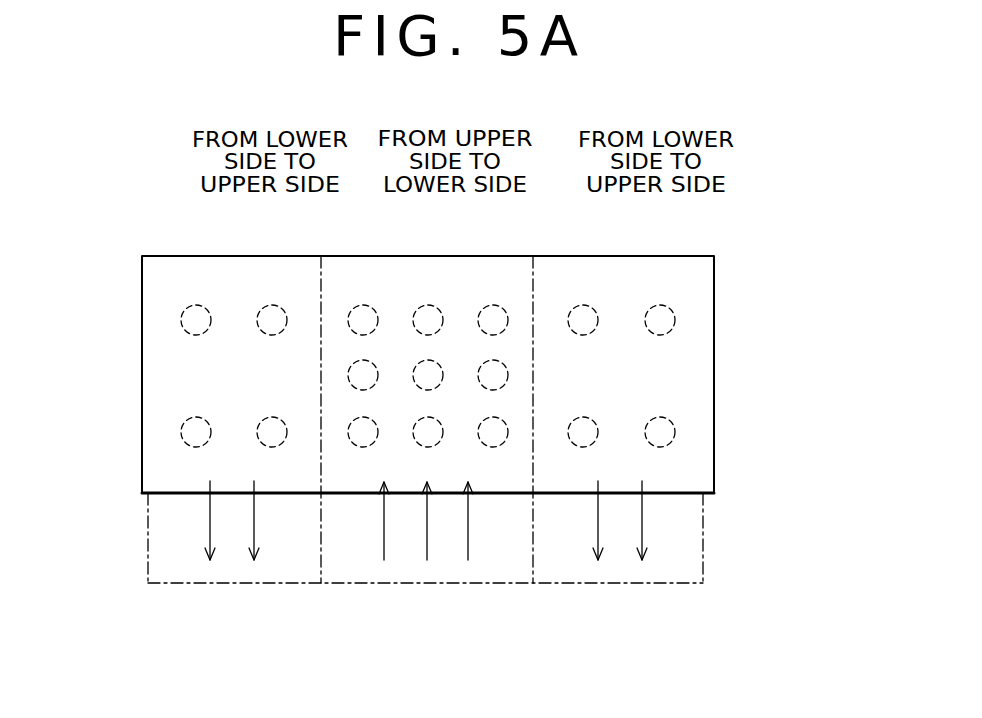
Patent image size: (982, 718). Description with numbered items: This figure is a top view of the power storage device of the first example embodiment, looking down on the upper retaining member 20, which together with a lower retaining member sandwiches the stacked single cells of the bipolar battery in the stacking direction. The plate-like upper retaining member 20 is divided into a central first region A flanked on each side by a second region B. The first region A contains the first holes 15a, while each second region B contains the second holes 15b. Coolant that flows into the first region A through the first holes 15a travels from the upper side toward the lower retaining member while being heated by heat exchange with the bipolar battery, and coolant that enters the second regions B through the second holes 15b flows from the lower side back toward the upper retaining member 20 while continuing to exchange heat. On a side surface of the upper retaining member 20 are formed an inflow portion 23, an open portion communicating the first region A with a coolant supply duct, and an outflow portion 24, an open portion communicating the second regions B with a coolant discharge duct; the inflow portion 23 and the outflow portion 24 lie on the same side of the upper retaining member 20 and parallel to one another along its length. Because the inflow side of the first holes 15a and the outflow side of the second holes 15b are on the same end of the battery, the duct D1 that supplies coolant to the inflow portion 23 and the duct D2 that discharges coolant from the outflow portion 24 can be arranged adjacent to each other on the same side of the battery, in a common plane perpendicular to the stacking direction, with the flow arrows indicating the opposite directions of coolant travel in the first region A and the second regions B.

The upper retaining member 20 is at (716, 258).
The second holes 15b is at (193, 320).
The first holes 15a is at (493, 437).
The inflow portion 23 is at (345, 485).
The outflow portion 24 is at (185, 494).
The duct D1 is at (423, 583).
The duct D2 is at (223, 583).
The first region A is at (458, 375).
The second regions B is at (237, 373).